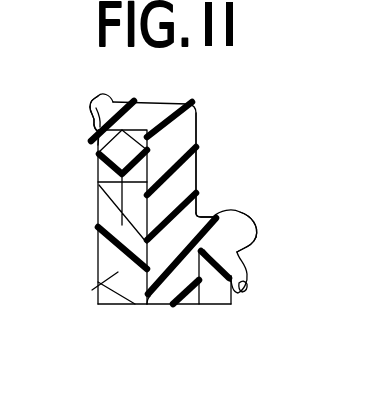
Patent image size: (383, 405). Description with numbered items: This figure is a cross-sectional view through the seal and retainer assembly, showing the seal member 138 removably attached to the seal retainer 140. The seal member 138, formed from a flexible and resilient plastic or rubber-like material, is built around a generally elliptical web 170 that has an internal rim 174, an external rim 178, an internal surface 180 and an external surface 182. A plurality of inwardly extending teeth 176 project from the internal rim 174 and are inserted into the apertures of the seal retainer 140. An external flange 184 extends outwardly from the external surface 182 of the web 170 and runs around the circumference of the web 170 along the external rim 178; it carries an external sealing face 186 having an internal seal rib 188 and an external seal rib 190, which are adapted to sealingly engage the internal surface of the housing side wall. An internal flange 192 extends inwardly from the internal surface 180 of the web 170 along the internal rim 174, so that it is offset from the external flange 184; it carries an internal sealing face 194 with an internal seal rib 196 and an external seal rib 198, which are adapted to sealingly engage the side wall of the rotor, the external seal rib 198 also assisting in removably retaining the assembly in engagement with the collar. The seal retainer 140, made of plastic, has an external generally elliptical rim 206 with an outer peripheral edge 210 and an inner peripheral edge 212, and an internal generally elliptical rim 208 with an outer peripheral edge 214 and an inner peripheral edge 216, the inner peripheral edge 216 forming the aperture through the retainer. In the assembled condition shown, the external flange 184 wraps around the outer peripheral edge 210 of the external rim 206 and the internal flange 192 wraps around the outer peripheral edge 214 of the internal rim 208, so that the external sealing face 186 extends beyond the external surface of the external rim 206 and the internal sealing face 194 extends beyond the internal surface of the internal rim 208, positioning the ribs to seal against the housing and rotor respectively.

The seal member 138 is at (206, 101).
The seal retainer 140 is at (86, 240).
The web 170 is at (178, 180).
The internal rim 174 is at (214, 208).
The teeth 176 is at (170, 300).
The external rim 178 is at (167, 105).
The internal surface 180 is at (198, 130).
The external surface 182 is at (98, 179).
The external flange 184 is at (125, 101).
The external sealing face 186 is at (88, 108).
The internal seal rib 188 is at (97, 135).
The external seal rib 190 is at (103, 96).
The internal flange 192 is at (236, 214).
The internal sealing face 194 is at (264, 242).
The internal seal rib 196 is at (253, 229).
The external seal rib 198 is at (248, 282).
The external rim 206 is at (118, 273).
The internal rim 208 is at (234, 306).
The outer peripheral edge 210 is at (98, 126).
The inner peripheral edge 212 is at (115, 306).
The outer peripheral edge 214 is at (247, 267).
The inner peripheral edge 216 is at (206, 305).